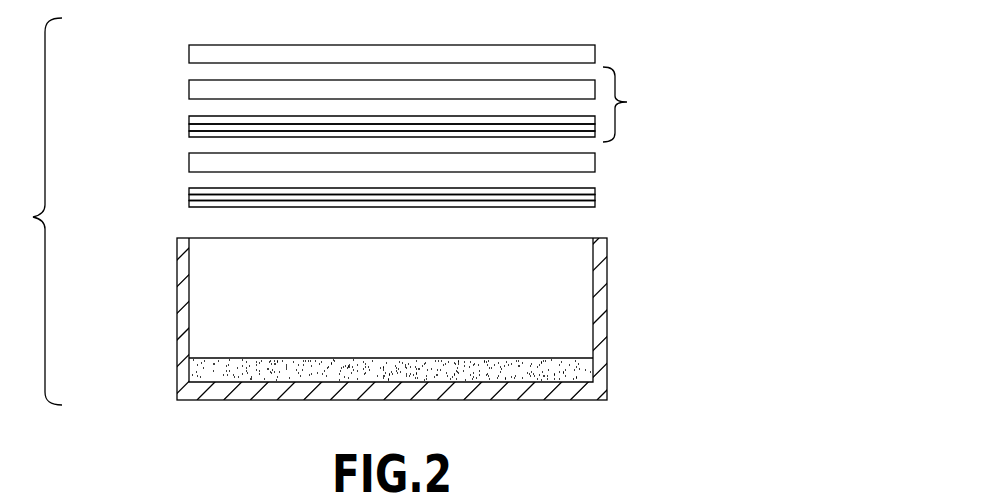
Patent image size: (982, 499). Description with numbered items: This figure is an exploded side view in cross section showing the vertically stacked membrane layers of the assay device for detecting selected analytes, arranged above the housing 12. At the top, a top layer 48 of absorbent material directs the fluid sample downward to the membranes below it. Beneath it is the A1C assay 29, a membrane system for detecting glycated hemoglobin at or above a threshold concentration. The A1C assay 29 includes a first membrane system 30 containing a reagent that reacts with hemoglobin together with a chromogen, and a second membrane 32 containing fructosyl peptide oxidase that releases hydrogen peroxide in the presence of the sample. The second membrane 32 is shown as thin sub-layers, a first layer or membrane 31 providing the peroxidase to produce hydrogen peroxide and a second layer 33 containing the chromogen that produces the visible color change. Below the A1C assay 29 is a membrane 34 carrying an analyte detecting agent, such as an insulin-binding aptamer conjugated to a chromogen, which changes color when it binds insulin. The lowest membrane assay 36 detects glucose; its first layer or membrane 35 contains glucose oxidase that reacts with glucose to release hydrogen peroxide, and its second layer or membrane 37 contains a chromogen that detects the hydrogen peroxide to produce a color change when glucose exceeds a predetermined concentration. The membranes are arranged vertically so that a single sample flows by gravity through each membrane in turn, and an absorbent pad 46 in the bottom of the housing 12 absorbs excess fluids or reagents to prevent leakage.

The top layer 48 is at (199, 55).
The first membrane system 30 is at (200, 93).
The first layer or membrane 31 is at (203, 120).
The second membrane 32 is at (176, 120).
The second layer 33 is at (202, 130).
The membrane 34 is at (204, 162).
The membrane assay 36 is at (175, 195).
The first layer or membrane 35 is at (590, 192).
The second layer or membrane 37 is at (590, 201).
The A1C assay 29 is at (637, 104).
The housing 12 is at (624, 281).
The absorbent pad 46 is at (565, 365).